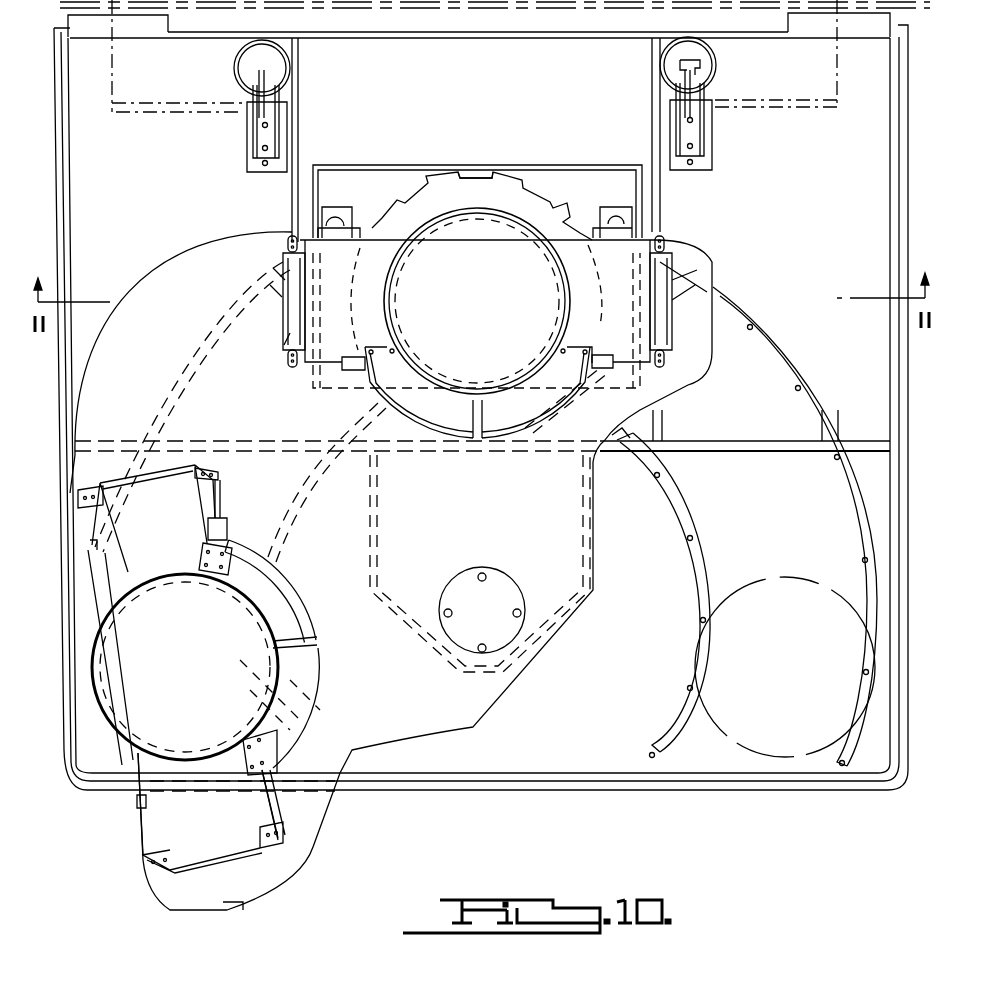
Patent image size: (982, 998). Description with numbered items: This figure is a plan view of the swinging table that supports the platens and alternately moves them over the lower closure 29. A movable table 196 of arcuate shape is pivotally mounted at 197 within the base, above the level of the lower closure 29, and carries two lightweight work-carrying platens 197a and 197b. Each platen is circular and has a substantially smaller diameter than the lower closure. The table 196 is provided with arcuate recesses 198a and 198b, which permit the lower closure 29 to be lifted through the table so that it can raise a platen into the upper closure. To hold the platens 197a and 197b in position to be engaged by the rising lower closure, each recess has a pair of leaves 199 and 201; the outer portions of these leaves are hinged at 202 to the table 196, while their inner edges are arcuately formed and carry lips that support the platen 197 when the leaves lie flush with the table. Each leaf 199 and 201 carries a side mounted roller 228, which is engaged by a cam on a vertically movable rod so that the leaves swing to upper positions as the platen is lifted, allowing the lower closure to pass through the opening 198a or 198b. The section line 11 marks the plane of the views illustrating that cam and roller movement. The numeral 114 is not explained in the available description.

The section line 11- 11 is at (483, 291).
The lower closure 29 is at (567, 196).
The gear tooth notch 114 is at (502, 177).
The movable table 196 is at (433, 727).
The pivot 197 is at (493, 577).
The platen 197a is at (212, 673).
The platen 197b is at (492, 293).
The arcuate recess 198a is at (303, 667).
The arcuate recess 198b is at (433, 443).
The leaf 199 is at (263, 815).
The leaf 201 is at (203, 503).
The hinge 202 is at (282, 338).
The side mounted roller 228 is at (137, 808).